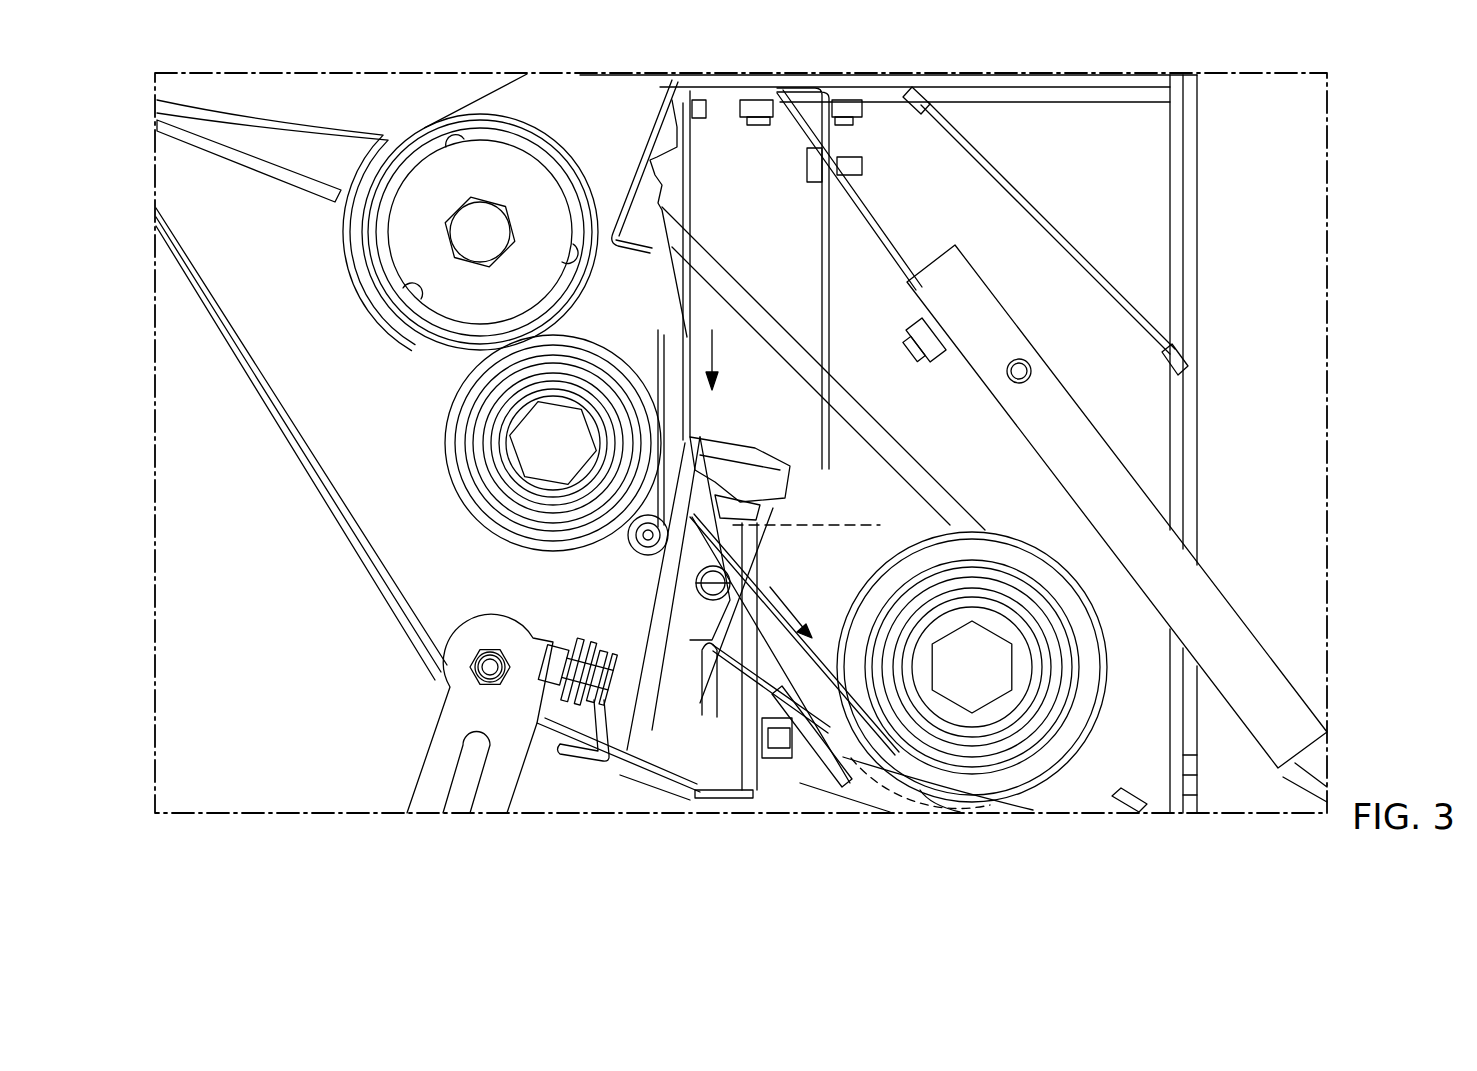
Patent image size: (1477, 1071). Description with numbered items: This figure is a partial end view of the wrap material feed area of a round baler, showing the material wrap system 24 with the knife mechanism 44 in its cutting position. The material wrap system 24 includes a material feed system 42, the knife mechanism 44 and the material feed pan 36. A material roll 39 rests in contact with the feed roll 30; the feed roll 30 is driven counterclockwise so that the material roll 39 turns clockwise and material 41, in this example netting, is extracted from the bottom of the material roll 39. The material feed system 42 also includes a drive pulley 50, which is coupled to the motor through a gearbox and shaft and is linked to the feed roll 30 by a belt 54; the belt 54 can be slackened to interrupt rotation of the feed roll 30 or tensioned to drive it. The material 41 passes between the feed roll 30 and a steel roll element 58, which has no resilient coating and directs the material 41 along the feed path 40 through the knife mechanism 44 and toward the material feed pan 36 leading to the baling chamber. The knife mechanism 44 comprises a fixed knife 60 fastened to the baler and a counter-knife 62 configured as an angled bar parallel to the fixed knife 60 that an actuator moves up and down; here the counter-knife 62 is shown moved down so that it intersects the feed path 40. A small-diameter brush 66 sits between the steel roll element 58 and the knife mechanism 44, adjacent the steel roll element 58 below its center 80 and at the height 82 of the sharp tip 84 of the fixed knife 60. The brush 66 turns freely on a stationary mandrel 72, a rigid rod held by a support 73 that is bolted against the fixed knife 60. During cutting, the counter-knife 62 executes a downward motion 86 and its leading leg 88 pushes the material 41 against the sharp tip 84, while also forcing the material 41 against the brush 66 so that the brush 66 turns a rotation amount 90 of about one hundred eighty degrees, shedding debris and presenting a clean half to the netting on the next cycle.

The material wrap system 24 is at (649, 63).
The feed roll 30 is at (550, 137).
The material feed pan 36 is at (973, 790).
The material roll 39 is at (392, 102).
The feed path 40 is at (790, 605).
The material 41 is at (738, 700).
The material feed system 42 is at (262, 228).
The knife mechanism 44 is at (607, 764).
The drive pulley 50 is at (1040, 710).
The belt 54 is at (903, 451).
The steel roll element 58 is at (490, 526).
The fixed knife 60 is at (627, 635).
The counter-knife 62 is at (700, 450).
The brush 66 is at (630, 533).
The mandrel 72 is at (690, 497).
The support 73 is at (593, 727).
The center 80 is at (553, 443).
The height 82 is at (862, 525).
The sharp tip 84 is at (765, 465).
The downward motion 86 is at (720, 352).
The leading leg 88 is at (678, 450).
The rotation amount 90 is at (620, 546).